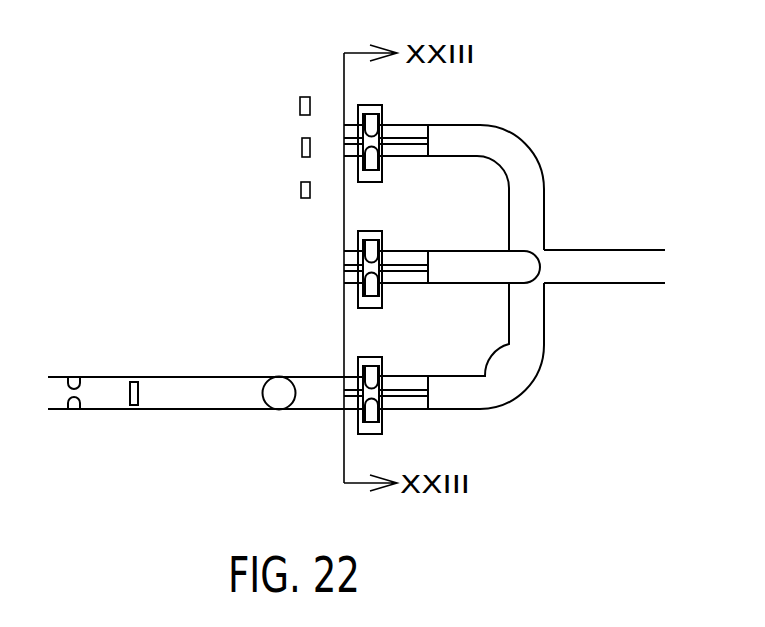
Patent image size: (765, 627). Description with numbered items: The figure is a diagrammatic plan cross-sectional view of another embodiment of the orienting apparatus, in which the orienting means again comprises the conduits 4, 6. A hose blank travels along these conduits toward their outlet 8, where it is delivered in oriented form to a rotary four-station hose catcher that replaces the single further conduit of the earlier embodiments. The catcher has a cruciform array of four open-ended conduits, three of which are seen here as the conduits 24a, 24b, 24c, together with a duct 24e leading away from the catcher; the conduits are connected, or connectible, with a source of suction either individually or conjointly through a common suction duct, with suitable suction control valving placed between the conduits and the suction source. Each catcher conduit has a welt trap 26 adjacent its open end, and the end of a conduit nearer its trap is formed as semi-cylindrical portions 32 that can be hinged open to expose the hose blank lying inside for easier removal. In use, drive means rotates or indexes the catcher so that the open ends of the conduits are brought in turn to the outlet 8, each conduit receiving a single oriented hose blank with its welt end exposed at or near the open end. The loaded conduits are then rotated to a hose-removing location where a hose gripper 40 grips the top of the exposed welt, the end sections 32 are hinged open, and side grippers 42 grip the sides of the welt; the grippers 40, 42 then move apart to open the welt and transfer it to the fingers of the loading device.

The conduit 4 is at (224, 410).
The conduit 6 is at (263, 384).
The outlet 8 is at (350, 391).
The open-ended conduit 24a is at (544, 183).
The open-ended conduit 24b is at (509, 281).
The open-ended conduit 24c is at (544, 331).
The outlet conduit 24e is at (630, 250).
The welt trap 26 is at (384, 237).
The semi-cylindrical portion 32 is at (413, 125).
The hose gripper 40 is at (292, 154).
The side gripper 42 is at (298, 107).